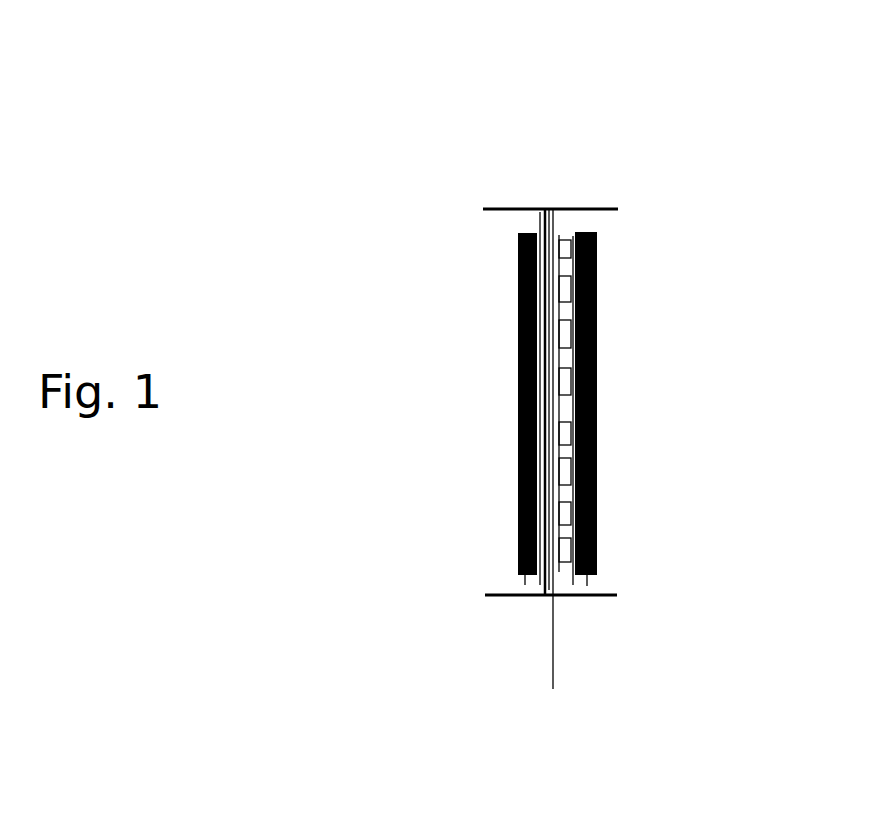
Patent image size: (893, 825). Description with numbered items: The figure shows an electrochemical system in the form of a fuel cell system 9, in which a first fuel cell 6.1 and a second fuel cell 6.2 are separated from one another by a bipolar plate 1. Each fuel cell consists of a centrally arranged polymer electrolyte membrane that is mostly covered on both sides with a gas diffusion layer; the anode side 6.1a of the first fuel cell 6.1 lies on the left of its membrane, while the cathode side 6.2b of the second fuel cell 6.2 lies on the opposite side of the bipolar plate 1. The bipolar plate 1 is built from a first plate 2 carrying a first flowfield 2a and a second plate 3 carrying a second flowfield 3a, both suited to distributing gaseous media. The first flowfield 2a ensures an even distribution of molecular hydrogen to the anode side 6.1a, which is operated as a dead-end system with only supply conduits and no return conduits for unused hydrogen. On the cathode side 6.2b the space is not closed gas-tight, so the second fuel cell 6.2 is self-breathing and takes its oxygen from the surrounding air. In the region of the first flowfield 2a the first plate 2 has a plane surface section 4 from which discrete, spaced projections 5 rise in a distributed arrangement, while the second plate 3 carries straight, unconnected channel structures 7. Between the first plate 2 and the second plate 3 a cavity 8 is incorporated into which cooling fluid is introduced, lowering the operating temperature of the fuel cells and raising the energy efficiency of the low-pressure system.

The bipolar plate 1 is at (545, 562).
The first plate 2 is at (676, 409).
The first flowfield 2a is at (590, 368).
The second plate 3 is at (452, 402).
The second flowfield 3a is at (555, 361).
The plane surface section 4 is at (588, 313).
The discrete projections 5 is at (577, 232).
The first fuel cell 6.1 is at (597, 242).
The anode side of the first fuel cell 6.1a is at (562, 236).
The second fuel cell 6.2 is at (516, 256).
The cathode side of the second fuel cell 6.2b is at (537, 230).
The channel structures 7 is at (545, 232).
The cavity 8 is at (550, 669).
The cell stack 9 is at (362, 162).